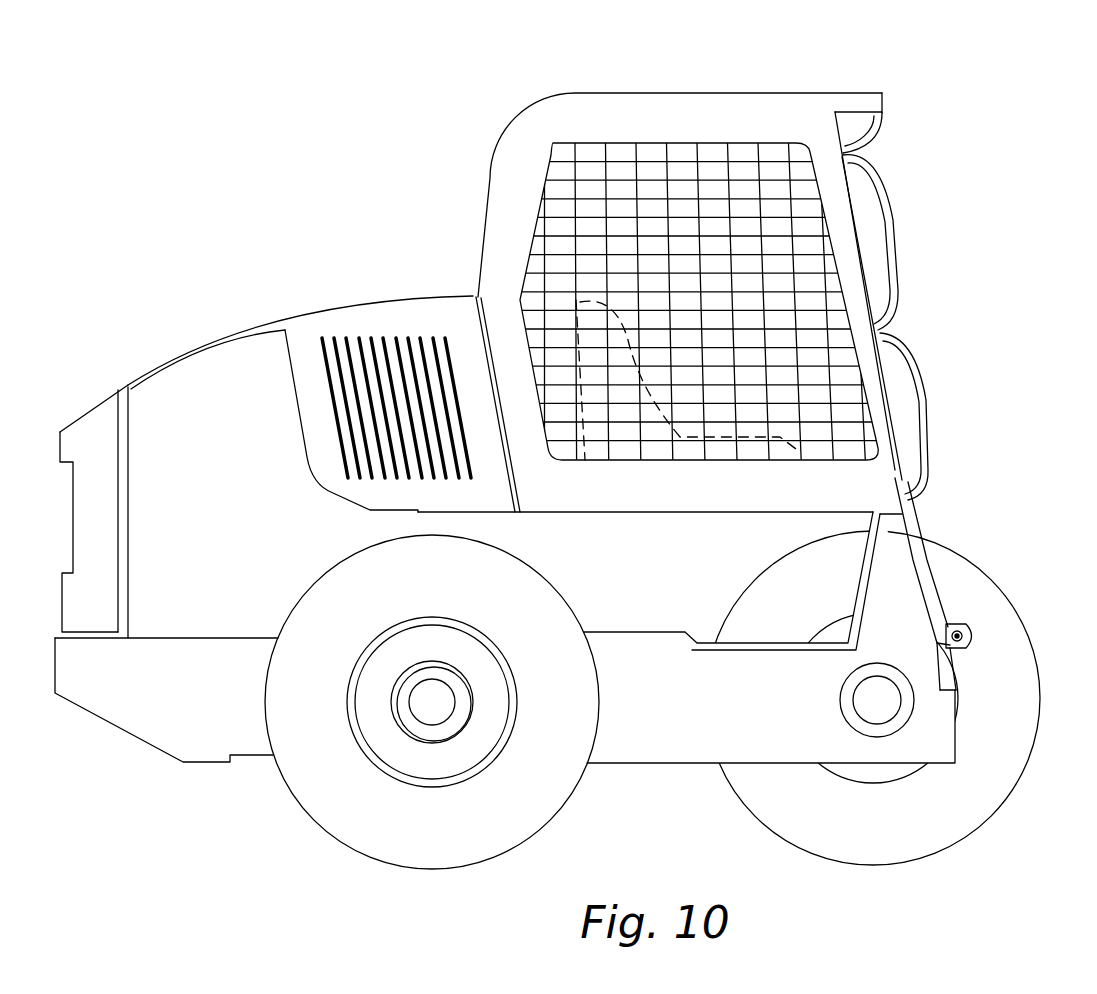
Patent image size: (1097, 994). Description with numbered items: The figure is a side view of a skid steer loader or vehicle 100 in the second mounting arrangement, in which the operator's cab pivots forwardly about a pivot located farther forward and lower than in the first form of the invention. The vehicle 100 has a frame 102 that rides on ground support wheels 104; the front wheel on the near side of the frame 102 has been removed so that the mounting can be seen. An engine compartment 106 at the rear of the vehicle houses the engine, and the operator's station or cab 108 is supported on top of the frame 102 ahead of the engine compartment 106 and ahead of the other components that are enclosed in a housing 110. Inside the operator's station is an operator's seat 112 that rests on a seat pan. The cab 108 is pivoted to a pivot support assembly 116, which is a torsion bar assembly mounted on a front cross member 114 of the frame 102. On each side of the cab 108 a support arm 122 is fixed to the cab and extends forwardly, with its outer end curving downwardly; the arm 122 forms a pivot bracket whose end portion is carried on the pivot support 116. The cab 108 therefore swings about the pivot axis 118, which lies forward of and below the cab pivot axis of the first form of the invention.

The skid steer loader 100 is at (318, 277).
The frame 102 is at (665, 727).
The ground support wheels 104 is at (343, 793).
The engine compartment 106 is at (202, 415).
The cab 108 is at (520, 155).
The housing 110 is at (390, 362).
The operator's seat 112 is at (576, 300).
The front cross member 114 is at (898, 568).
The pivot support assembly 116 is at (978, 628).
The pivot axis 118 is at (977, 643).
The support arm 122 is at (945, 637).